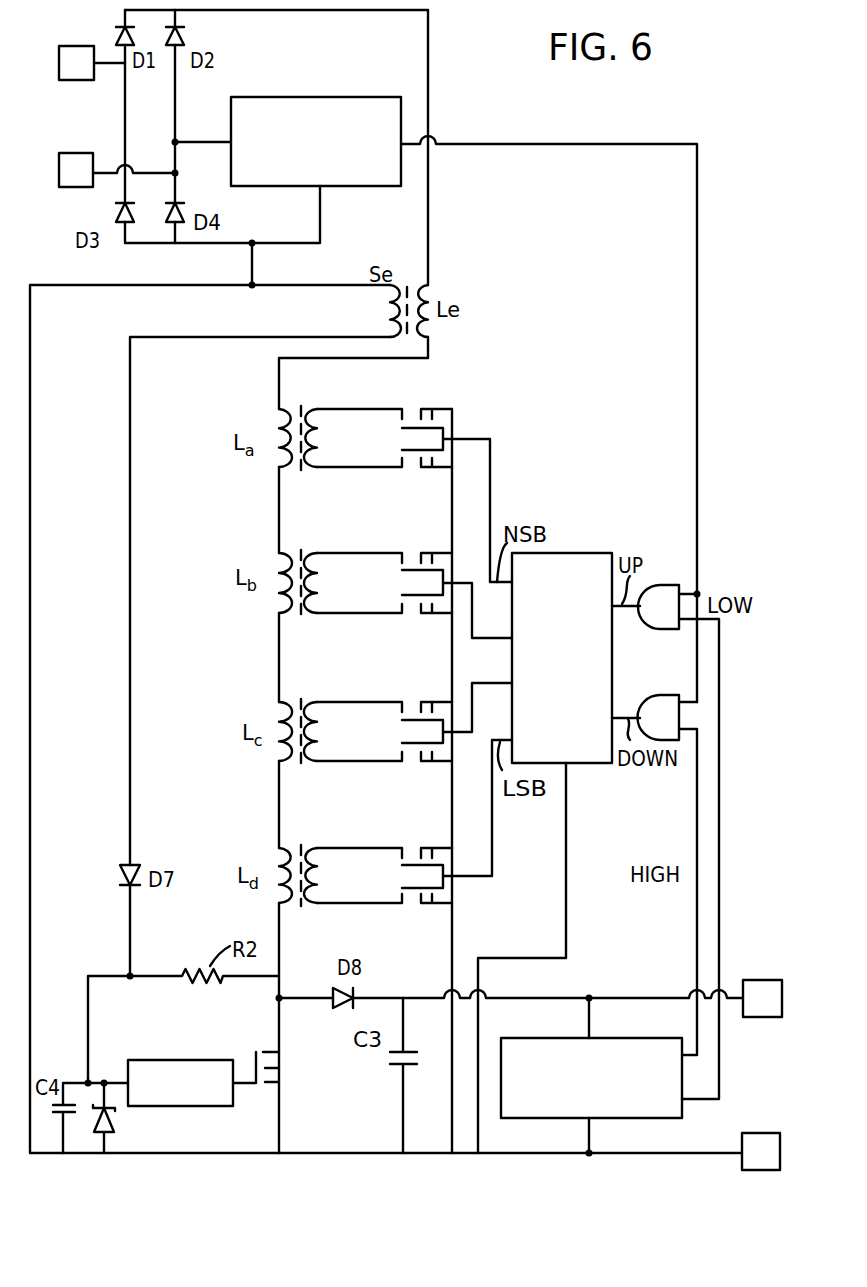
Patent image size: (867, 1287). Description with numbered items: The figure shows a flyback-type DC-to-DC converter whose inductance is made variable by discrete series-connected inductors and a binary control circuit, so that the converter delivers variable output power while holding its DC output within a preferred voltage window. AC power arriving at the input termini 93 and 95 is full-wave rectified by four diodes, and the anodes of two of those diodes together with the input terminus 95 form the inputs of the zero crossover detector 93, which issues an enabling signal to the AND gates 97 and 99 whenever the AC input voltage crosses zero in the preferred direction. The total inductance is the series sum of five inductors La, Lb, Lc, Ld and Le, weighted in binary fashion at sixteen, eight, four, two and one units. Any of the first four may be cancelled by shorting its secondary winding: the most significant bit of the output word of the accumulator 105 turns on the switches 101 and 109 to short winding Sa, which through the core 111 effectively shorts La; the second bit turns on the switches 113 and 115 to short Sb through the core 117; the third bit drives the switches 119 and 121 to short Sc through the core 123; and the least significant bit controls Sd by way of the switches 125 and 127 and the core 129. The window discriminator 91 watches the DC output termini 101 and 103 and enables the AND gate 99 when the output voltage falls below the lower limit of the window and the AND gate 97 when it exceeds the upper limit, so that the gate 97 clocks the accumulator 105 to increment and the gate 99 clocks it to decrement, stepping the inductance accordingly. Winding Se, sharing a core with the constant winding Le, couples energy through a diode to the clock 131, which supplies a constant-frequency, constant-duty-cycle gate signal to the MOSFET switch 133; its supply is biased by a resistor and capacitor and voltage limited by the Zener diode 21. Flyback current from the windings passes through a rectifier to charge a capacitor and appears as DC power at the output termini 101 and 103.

The zero crossover detector 93 is at (80, 46).
The AC input terminus 95 is at (79, 153).
The DC output terminus 101 is at (432, 418).
The DC output terminus 103 is at (762, 1133).
The accumulator 105 is at (580, 553).
The switch 109 is at (436, 468).
The core 111 is at (308, 410).
The switch 113 is at (437, 553).
The switch 115 is at (437, 614).
The core 117 is at (308, 554).
The switch 119 is at (438, 702).
The switch 121 is at (432, 762).
The core 123 is at (305, 702).
The switch 125 is at (436, 848).
The switch 127 is at (432, 904).
The core 129 is at (304, 848).
The clock 131 is at (208, 1060).
The MOSFET switch 133 is at (282, 1075).
The window discriminator 91 is at (660, 1038).
The AND gate 97 is at (664, 585).
The AND gate 99 is at (664, 696).
The zener diode 21 is at (114, 1122).